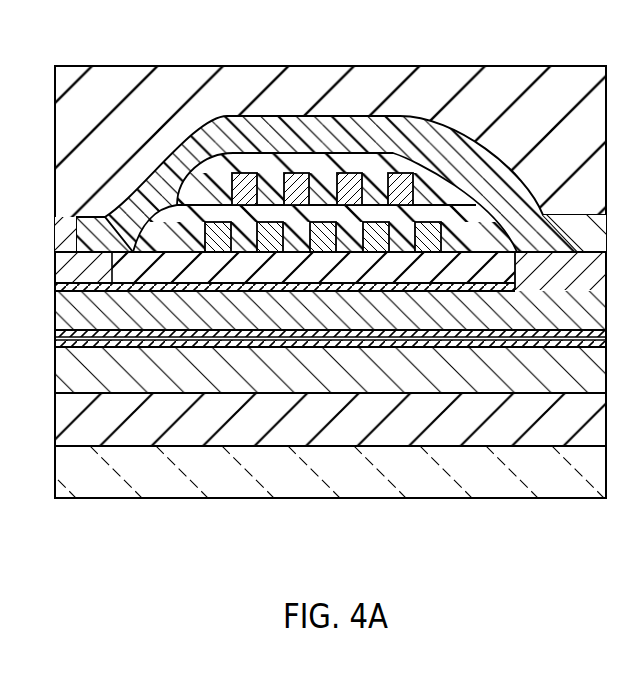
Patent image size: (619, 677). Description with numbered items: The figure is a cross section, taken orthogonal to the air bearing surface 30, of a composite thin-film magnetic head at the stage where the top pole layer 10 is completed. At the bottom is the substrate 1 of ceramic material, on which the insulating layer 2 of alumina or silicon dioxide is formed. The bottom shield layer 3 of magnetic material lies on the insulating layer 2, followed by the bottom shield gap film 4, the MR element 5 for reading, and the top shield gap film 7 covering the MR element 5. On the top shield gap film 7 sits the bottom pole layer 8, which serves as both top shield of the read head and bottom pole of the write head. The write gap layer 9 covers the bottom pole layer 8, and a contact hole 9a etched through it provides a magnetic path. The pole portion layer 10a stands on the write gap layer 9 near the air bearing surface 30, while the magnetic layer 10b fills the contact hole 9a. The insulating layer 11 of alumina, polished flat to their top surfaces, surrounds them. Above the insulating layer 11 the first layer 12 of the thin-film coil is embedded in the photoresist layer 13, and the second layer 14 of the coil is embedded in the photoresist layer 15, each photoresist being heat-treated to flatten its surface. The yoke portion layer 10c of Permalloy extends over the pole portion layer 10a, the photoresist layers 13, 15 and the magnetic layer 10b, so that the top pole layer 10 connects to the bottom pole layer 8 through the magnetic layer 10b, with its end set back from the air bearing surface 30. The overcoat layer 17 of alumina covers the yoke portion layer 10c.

The substrate 1 is at (422, 470).
The insulating layer 2 is at (478, 436).
The bottom shield layer 3 is at (530, 383).
The bottom shield gap film 4 is at (187, 345).
The MR element 5 is at (62, 349).
The top shield gap film 7 is at (137, 338).
The bottom pole layer 8 is at (97, 318).
The write gap layer 9 is at (90, 254).
The contact hole 9a is at (530, 283).
The top pole layer 10 is at (182, 134).
The pole portion layer 10a is at (60, 250).
The magnetic layer 10b is at (582, 258).
The yoke portion layer 10c is at (290, 128).
The insulating layer 11 is at (478, 263).
The first layer of the thin-film coil 12 is at (216, 228).
The photoresist layer 13 is at (247, 214).
The second layer of the thin-film coil 14 is at (303, 172).
The photoresist layer 15 is at (375, 161).
The overcoat layer 17 is at (430, 80).
The air bearing surface 30 is at (54, 296).